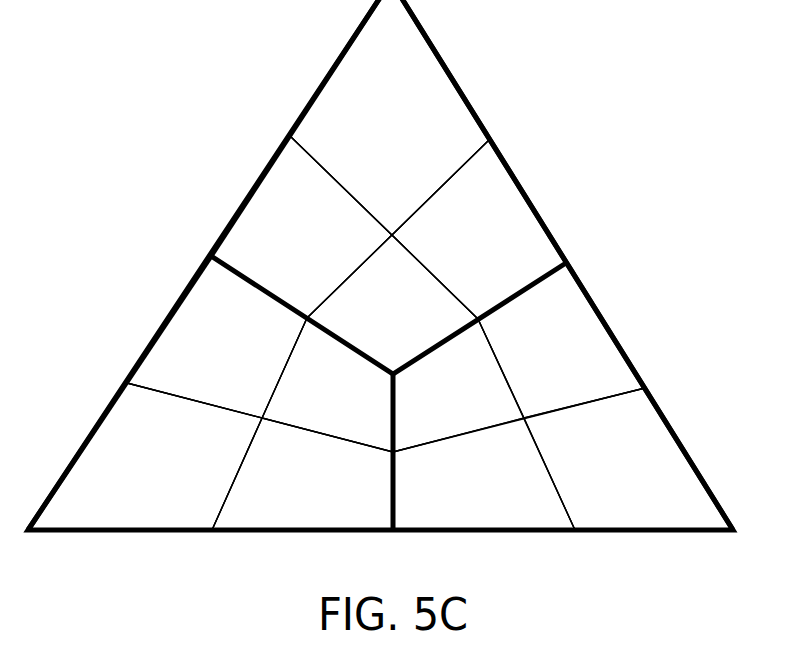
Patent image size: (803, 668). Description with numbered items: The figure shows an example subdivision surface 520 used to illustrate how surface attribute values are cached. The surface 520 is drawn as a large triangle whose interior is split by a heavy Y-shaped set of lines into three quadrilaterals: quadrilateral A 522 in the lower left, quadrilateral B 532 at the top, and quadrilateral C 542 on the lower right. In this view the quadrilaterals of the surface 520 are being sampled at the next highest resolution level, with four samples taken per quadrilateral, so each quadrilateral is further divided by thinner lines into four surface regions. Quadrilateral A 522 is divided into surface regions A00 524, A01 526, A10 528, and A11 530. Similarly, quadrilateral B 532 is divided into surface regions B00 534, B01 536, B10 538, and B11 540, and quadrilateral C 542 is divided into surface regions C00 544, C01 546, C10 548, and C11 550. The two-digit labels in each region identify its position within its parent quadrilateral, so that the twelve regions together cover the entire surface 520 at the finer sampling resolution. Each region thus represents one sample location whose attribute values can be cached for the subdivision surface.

The surface 520 is at (380, 265).
The quadrilateral A 522 is at (112, 403).
The quadrilateral B 532 is at (331, 72).
The quadrilateral C 542 is at (652, 398).
The surface region A00 524 is at (145, 456).
The surface region A01 526 is at (217, 337).
The surface region A10 528 is at (327, 385).
The surface region A11 530 is at (302, 474).
The surface region B00 534 is at (301, 226).
The surface region B01 536 is at (389, 117).
The surface region B10 538 is at (479, 229).
The surface region B11 540 is at (392, 304).
The surface region C00 544 is at (484, 474).
The surface region C01 546 is at (458, 385).
The surface region C10 548 is at (561, 340).
The surface region C11 550 is at (628, 459).